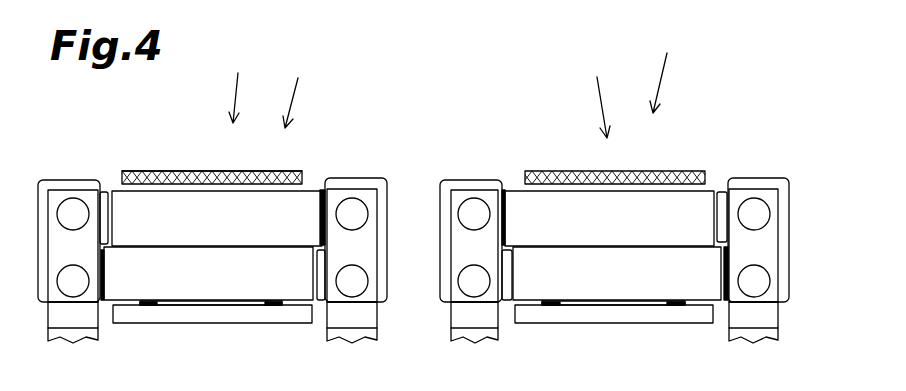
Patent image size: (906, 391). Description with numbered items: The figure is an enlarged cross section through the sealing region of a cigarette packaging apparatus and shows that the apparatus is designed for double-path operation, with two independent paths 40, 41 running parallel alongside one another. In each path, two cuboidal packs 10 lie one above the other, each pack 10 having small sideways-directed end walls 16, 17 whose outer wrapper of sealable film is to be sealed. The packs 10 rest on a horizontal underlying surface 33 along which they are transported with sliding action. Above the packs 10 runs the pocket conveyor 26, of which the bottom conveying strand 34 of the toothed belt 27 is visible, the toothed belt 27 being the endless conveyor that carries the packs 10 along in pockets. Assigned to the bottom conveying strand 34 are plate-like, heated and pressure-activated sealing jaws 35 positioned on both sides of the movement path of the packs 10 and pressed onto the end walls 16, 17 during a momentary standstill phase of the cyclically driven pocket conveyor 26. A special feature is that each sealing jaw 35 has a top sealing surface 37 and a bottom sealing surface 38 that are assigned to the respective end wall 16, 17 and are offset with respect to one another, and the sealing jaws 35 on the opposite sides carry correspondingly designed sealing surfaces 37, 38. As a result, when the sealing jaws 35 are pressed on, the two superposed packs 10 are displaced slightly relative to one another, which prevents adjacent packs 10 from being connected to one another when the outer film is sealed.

The pack 10 is at (233, 234).
The end wall 16 is at (113, 230).
The end wall 17 is at (320, 215).
The pocket conveyor 26 is at (483, 76).
The toothed belt 27 is at (284, 160).
The underlying surface 33 is at (213, 312).
The bottom conveying strand 34 is at (190, 175).
The sealing jaw 35 is at (68, 185).
The top sealing surface 37 is at (500, 213).
The bottom sealing surface 38 is at (511, 275).
The path 40 is at (239, 79).
The path 41 is at (594, 88).